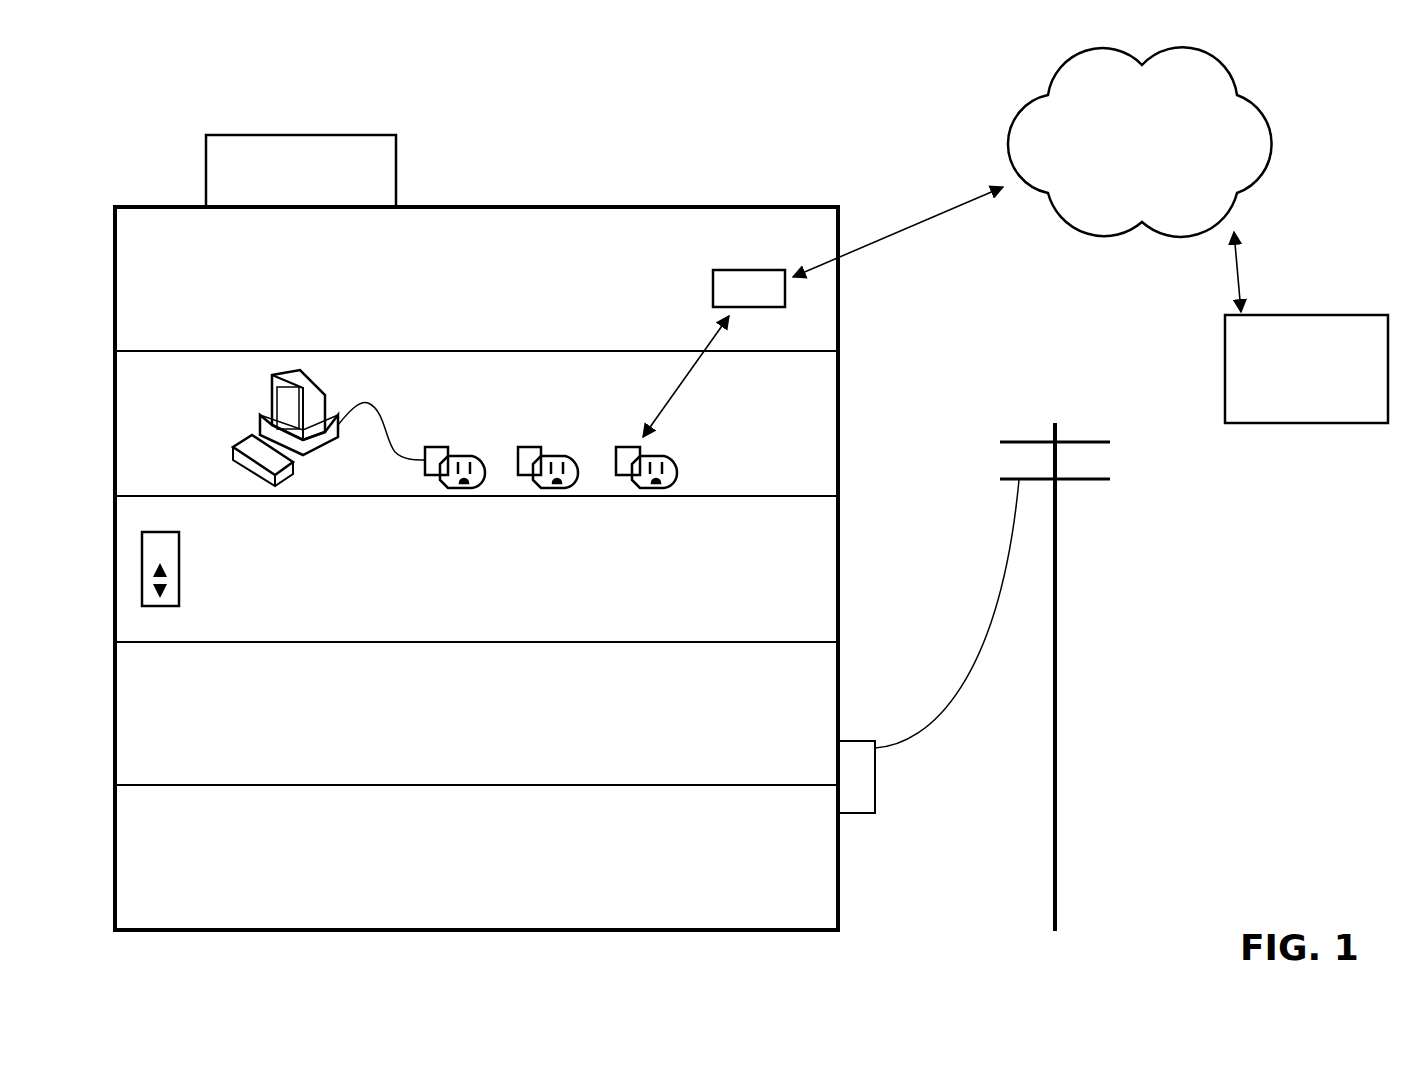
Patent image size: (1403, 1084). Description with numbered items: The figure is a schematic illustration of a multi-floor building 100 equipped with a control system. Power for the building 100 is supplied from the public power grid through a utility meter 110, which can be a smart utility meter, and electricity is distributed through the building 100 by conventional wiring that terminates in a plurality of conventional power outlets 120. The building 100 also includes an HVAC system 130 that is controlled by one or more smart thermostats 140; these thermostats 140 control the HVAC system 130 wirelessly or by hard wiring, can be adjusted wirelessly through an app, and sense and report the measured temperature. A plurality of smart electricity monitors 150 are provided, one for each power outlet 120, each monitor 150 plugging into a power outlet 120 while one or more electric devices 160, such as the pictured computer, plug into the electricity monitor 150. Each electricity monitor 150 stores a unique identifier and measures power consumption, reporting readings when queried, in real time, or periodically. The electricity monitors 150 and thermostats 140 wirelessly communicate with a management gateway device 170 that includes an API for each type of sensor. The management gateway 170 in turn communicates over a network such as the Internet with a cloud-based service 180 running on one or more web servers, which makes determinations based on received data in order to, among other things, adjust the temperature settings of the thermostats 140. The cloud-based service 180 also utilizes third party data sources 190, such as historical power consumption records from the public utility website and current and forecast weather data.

The building 100 is at (757, 205).
The utility meter 110 is at (876, 782).
The power outlets 120 is at (660, 450).
The HVAC system 130 is at (398, 178).
The smart thermostats 140 is at (180, 577).
The smart electricity monitors 150 is at (438, 447).
The electric devices 160 is at (260, 422).
The management gateway device 170 is at (713, 287).
The cloud-based service 180 is at (1008, 120).
The third party data sources 190 is at (1223, 368).